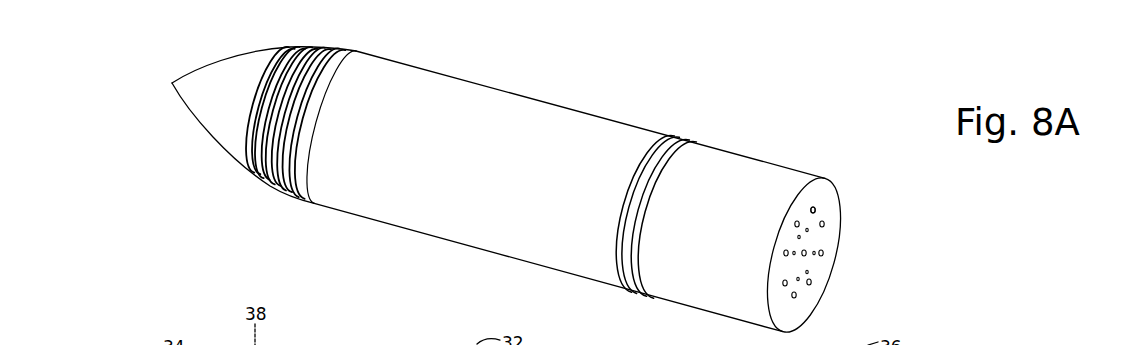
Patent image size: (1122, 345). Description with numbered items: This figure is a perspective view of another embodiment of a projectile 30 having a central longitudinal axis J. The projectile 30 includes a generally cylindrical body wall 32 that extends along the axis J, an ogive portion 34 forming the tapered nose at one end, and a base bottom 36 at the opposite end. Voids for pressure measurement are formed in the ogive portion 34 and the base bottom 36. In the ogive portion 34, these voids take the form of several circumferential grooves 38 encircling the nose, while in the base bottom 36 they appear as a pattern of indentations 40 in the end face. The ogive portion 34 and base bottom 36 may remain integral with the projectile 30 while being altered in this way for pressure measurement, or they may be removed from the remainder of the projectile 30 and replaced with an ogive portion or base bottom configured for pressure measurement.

The projectile 30 is at (378, 244).
The cylindrical body wall 32 is at (528, 107).
The ogive portion 34 is at (252, 62).
The base bottom 36 is at (818, 198).
The circumferential grooves 38 is at (268, 174).
The indentations 40 is at (820, 253).
The central longitudinal axis J is at (207, 92).